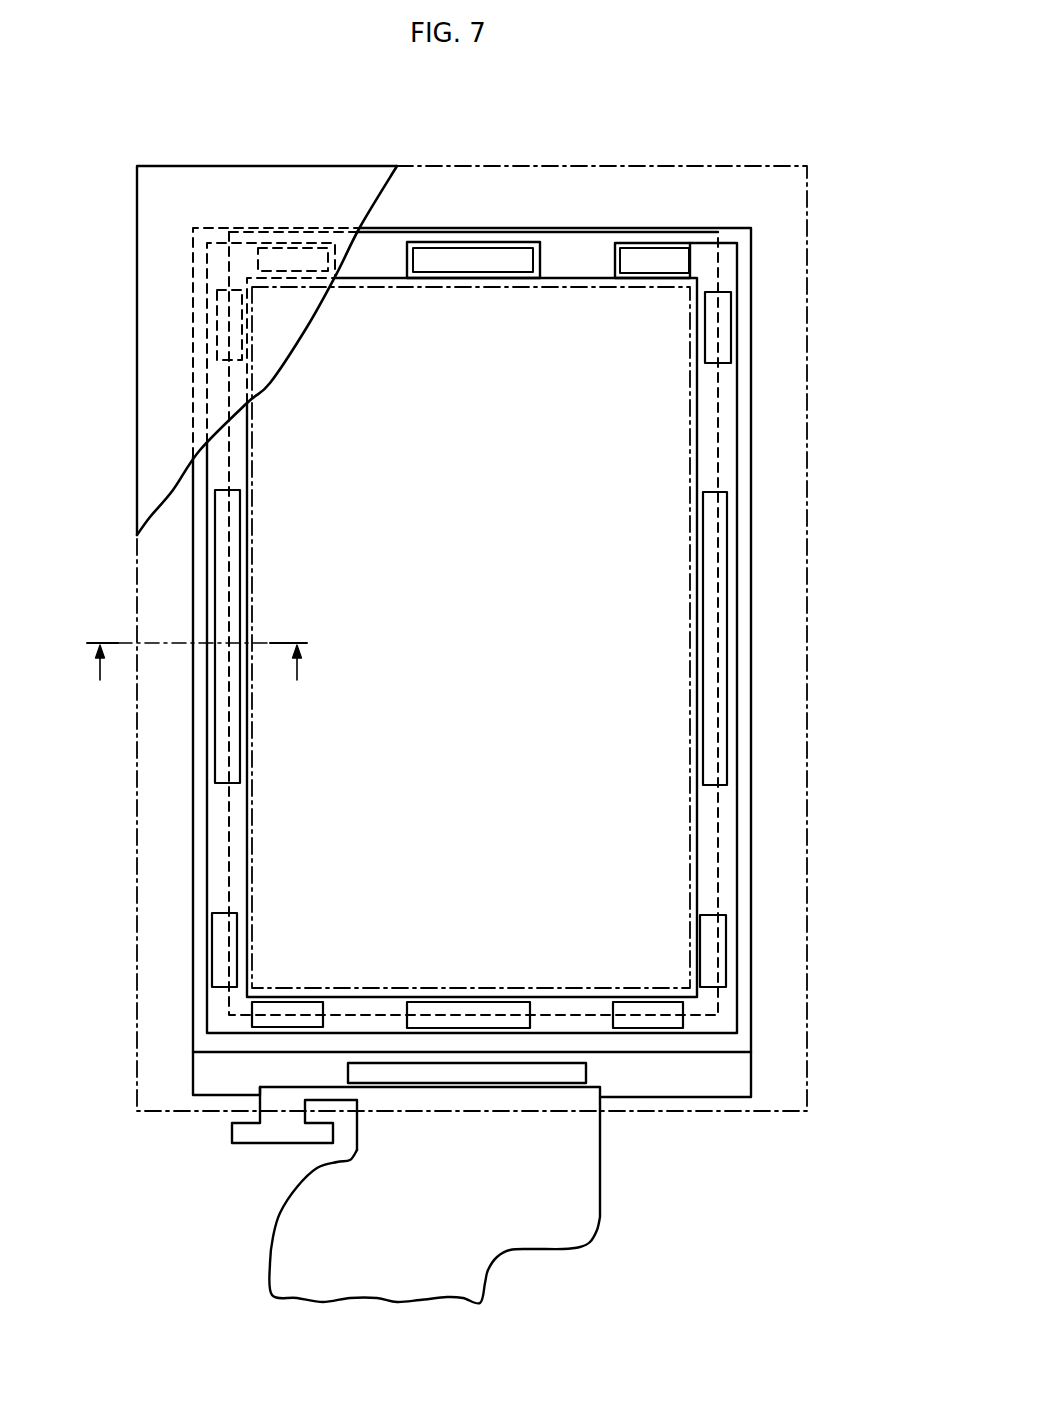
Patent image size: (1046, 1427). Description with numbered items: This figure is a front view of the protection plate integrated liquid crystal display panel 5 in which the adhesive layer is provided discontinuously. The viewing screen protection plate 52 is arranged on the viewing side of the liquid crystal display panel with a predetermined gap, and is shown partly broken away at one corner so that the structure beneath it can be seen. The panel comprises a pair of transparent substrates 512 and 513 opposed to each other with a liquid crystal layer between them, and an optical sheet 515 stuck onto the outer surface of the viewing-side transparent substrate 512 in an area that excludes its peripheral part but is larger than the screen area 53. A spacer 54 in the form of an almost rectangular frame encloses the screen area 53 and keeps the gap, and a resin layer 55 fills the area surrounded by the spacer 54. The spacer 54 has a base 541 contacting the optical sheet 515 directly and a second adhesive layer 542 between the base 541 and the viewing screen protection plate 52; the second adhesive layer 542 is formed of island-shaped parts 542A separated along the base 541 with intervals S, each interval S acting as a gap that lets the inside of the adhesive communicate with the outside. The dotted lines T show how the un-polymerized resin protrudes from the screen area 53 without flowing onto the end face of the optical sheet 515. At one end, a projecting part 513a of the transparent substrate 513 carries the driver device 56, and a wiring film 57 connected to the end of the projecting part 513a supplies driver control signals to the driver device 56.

The protection plate integrated liquid crystal display panel 5 is at (503, 118).
The viewing screen protection plate 52 is at (158, 1112).
The screen area 53 is at (688, 837).
The spacer 54 is at (183, 843).
The resin layer 55 is at (695, 882).
The driver device 56 is at (572, 1072).
The wiring film 57 is at (583, 1237).
The transparent substrate 512 is at (197, 1023).
The transparent substrate 513 is at (210, 1077).
The projecting part 513a is at (715, 1078).
The optical sheet 515 is at (223, 812).
The base 541 is at (215, 893).
The second adhesive layer 542 is at (753, 553).
The island-shaped parts 542A is at (513, 257).
The dotted lines T is at (613, 255).
The intervals S is at (247, 430).